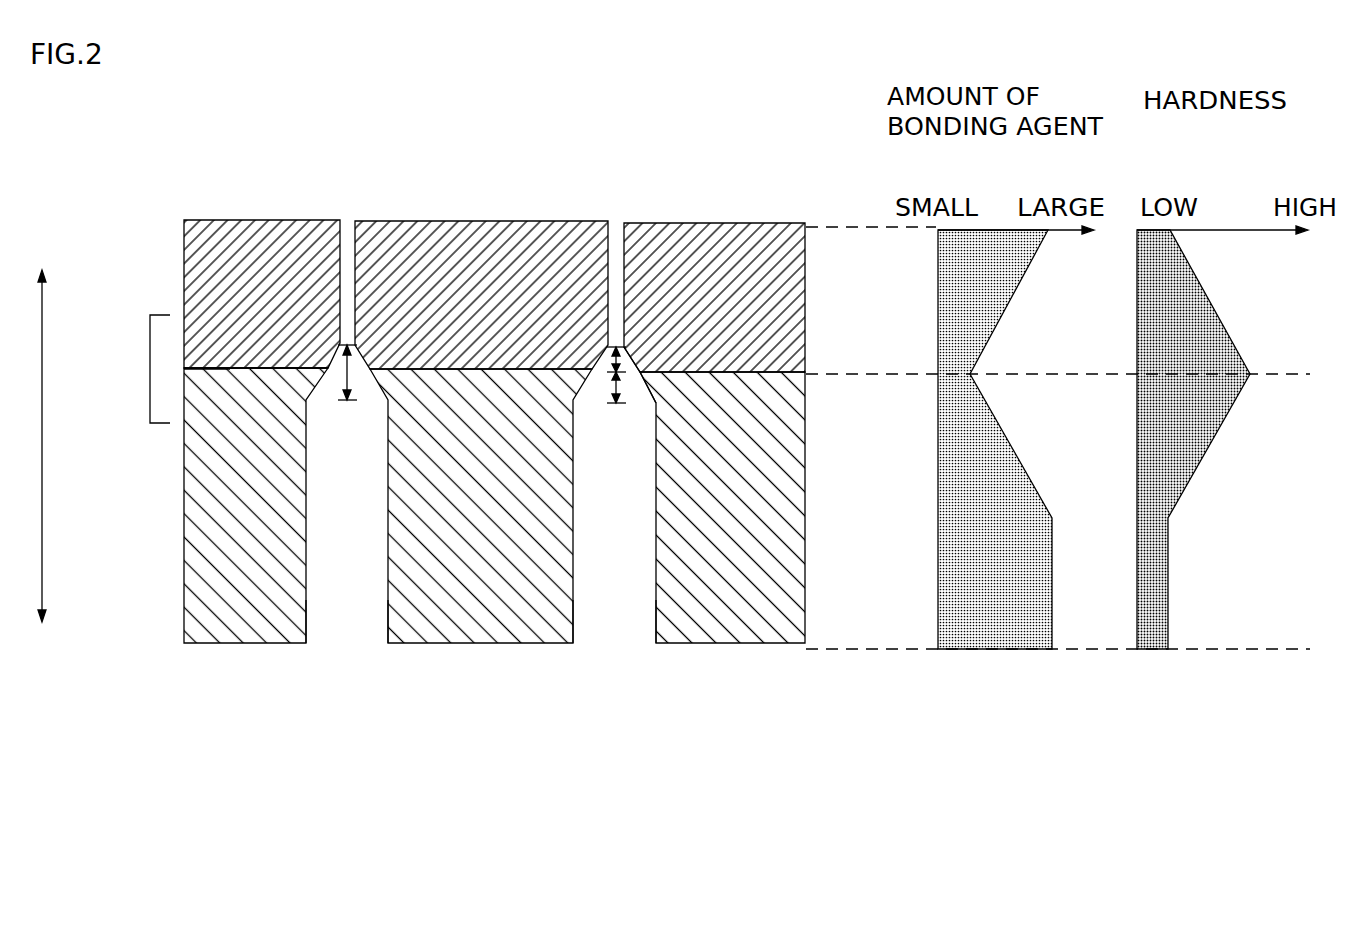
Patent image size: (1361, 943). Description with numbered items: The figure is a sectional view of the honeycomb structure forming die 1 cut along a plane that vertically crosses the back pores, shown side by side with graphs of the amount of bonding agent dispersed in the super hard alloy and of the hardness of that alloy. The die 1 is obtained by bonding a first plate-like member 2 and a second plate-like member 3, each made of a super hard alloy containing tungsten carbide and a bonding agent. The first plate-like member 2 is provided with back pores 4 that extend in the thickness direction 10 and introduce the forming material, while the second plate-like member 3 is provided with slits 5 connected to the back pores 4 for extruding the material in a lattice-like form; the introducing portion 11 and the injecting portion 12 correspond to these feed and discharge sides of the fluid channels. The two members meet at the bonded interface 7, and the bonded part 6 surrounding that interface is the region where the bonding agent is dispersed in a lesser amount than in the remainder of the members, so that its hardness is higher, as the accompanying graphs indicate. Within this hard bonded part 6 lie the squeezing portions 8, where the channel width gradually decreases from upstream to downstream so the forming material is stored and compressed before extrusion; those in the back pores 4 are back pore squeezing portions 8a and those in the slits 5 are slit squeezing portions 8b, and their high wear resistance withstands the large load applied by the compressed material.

The honeycomb structure forming die 1 is at (199, 155).
The first plate-like member 2 is at (208, 585).
The second plate-like member 3 is at (203, 244).
The back pore 4 is at (360, 594).
The slit 5 is at (348, 220).
The bonded part 6 is at (148, 369).
The bonded interface 7 is at (213, 369).
The squeezing portion 8 is at (340, 362).
The back pore squeezing portion 8a is at (626, 392).
The slit squeezing portion 8b is at (623, 358).
The thickness direction 10 is at (59, 446).
The introducing portion 11 is at (607, 618).
The injecting portion 12 is at (615, 250).